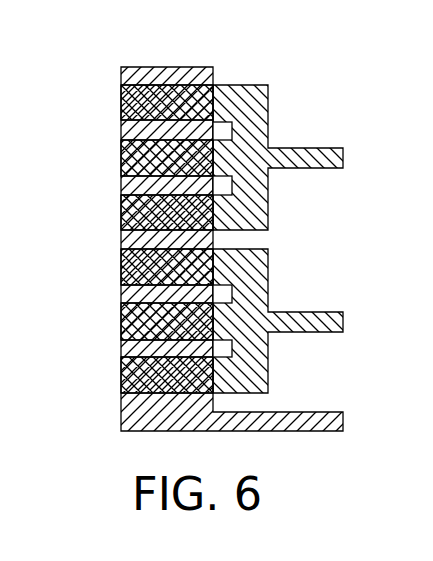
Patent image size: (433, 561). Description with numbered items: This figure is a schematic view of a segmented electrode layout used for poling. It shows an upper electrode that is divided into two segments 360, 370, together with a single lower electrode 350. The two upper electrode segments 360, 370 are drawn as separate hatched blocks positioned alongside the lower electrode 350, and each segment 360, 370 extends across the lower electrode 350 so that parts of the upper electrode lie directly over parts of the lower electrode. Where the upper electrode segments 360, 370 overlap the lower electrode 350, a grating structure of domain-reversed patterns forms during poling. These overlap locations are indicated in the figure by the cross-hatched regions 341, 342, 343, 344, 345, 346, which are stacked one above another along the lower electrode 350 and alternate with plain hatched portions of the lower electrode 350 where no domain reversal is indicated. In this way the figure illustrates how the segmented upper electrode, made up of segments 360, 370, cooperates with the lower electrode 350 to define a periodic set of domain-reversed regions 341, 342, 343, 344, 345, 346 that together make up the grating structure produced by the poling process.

The cross-hatched region 341 is at (121, 109).
The cross-hatched region 342 is at (121, 159).
The cross-hatched region 343 is at (121, 214).
The cross-hatched region 344 is at (121, 272).
The cross-hatched region 345 is at (121, 322).
The cross-hatched region 346 is at (121, 377).
The lower electrode 350 is at (207, 66).
The upper electrode segment 360 is at (279, 128).
The upper electrode segment 370 is at (279, 290).